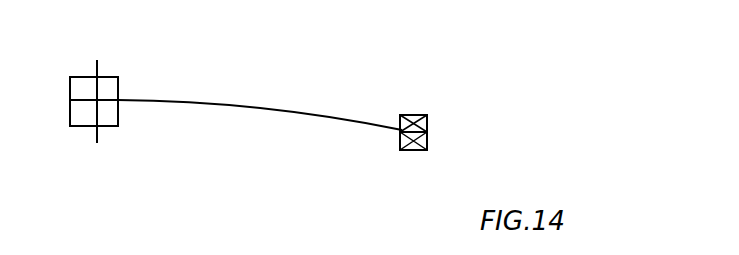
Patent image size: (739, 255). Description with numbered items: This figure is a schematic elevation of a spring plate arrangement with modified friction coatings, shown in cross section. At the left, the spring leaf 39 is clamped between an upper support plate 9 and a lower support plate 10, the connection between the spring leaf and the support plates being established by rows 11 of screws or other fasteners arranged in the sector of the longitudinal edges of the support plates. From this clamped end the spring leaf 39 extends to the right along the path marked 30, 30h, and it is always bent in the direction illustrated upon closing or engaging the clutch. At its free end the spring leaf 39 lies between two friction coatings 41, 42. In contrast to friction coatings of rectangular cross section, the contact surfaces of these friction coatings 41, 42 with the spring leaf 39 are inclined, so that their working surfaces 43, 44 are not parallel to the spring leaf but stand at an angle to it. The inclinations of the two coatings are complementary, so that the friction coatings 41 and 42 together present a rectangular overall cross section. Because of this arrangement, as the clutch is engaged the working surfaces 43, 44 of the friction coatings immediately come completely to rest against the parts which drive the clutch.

The upper support plate 9 is at (88, 83).
The lower support plate 10 is at (83, 112).
The row of screws 11 is at (137, 76).
The signal path 30 is at (260, 141).
The signal path variant h 30h is at (260, 104).
The spring leaf 39 is at (232, 107).
The friction coating 41 is at (427, 122).
The friction coating 42 is at (427, 145).
The working surface 43 is at (410, 115).
The working surface 44 is at (417, 150).